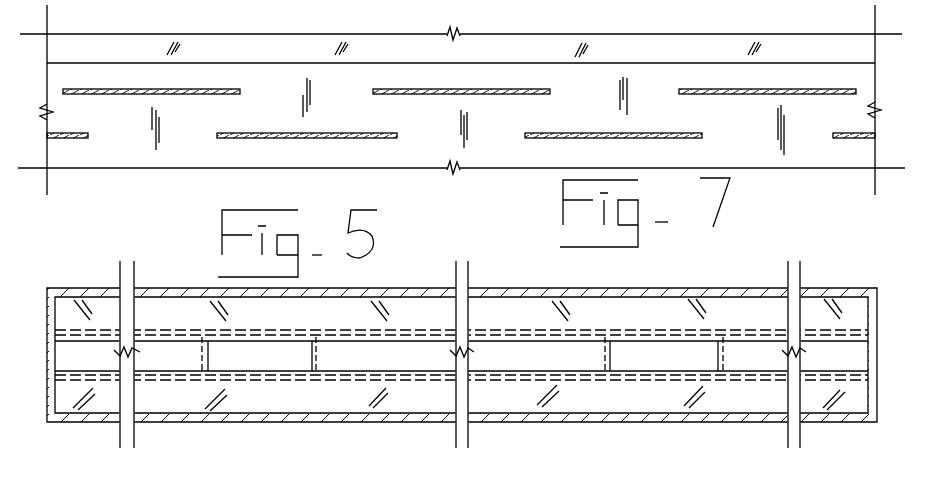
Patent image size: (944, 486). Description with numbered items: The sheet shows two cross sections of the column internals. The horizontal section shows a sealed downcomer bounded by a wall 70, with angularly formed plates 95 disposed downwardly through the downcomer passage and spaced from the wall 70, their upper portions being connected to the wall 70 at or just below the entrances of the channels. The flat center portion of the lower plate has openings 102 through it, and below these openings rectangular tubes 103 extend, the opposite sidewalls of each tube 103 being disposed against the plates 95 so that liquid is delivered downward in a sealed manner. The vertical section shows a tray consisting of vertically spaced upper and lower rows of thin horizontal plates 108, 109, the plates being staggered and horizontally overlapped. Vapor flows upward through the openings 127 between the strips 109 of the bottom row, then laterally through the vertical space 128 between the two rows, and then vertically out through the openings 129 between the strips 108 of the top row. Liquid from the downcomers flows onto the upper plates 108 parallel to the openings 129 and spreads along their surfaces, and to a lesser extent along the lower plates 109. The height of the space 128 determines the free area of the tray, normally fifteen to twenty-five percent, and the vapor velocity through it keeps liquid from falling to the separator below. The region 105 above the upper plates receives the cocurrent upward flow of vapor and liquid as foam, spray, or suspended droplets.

In FIG. 7, the wall 70 is at (502, 163).
In FIG. 5, the wall 70 is at (78, 289).
In FIG. 5, the angularly formed plate 95 is at (153, 328).
In FIG. 5, the opening 102 is at (648, 355).
In FIG. 5, the rectangular tube 103 is at (317, 353).
In FIG. 7, the upper channel 105 is at (512, 60).
In FIG. 7, the upper plate 108 is at (177, 88).
In FIG. 7, the lower plate 109 is at (67, 139).
In FIG. 7, the opening 127 is at (173, 135).
In FIG. 7, the space 128 is at (536, 108).
In FIG. 7, the opening 129 is at (284, 91).